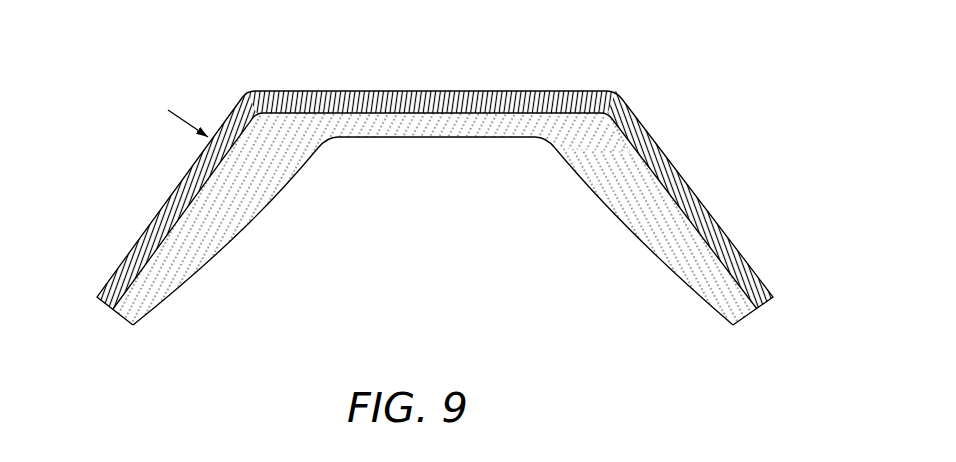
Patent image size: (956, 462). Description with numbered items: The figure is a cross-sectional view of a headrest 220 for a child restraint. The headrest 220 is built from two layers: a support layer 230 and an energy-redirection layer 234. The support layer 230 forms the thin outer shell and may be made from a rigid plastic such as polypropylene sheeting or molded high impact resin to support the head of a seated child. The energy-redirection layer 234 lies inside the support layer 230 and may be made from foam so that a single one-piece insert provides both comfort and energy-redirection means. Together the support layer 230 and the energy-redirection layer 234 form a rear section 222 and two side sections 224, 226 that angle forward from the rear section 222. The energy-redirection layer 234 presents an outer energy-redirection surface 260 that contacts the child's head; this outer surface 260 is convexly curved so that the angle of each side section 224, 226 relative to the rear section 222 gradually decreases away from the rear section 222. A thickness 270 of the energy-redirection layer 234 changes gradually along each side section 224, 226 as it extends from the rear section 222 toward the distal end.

The headrest 220 is at (649, 85).
The rear section 222 is at (526, 89).
The side section 224 is at (157, 181).
The side section 226 is at (699, 151).
The support layer 230 is at (436, 89).
The energy-redirection layer 234 is at (232, 224).
The outer energy-redirection surface 260 is at (184, 290).
The thickness 270 is at (284, 189).